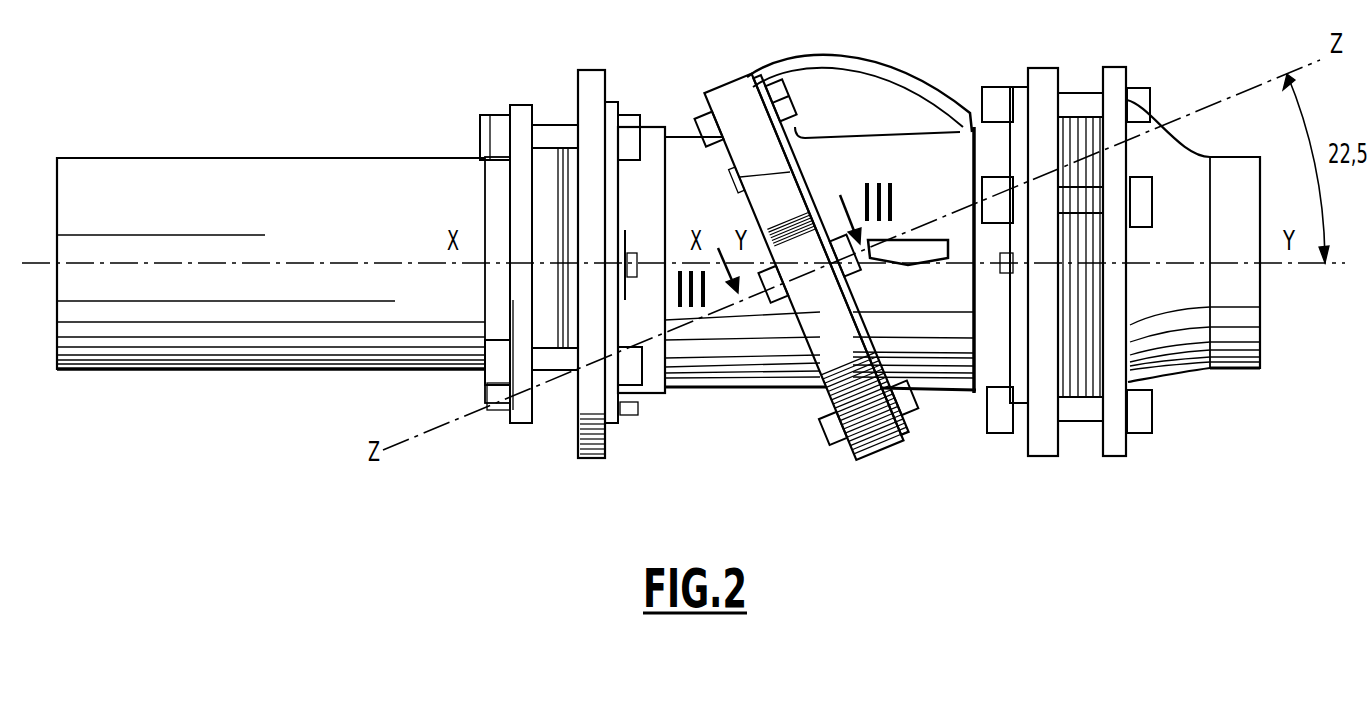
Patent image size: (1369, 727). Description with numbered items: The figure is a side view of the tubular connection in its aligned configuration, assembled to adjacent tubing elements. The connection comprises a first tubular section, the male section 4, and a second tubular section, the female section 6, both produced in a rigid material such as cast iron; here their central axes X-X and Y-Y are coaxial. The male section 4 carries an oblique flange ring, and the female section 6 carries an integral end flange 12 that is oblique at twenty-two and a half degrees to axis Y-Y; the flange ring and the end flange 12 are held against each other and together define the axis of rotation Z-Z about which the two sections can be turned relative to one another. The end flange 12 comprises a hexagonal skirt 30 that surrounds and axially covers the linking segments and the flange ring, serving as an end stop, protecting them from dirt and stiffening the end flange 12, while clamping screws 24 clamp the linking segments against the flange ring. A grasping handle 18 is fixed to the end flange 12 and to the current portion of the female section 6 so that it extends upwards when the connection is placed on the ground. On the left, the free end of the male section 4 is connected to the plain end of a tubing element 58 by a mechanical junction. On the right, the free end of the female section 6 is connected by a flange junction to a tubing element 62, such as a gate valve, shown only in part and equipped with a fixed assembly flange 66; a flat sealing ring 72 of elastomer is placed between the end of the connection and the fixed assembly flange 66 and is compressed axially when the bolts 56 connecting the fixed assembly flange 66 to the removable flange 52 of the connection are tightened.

The male section 4 is at (730, 392).
The female section 6 is at (945, 392).
The end flange 12 is at (745, 92).
The grasping handle 18 is at (882, 73).
The clamping screws 24 is at (774, 100).
The hexagonal skirt 30 is at (718, 100).
The removable flange 52 is at (588, 76).
The bolts 56 is at (557, 120).
The tubing element 58 is at (290, 157).
The tubing element 62 is at (1170, 376).
The fixed assembly flange 66 is at (1117, 447).
The flat sealing ring 72 is at (1088, 117).